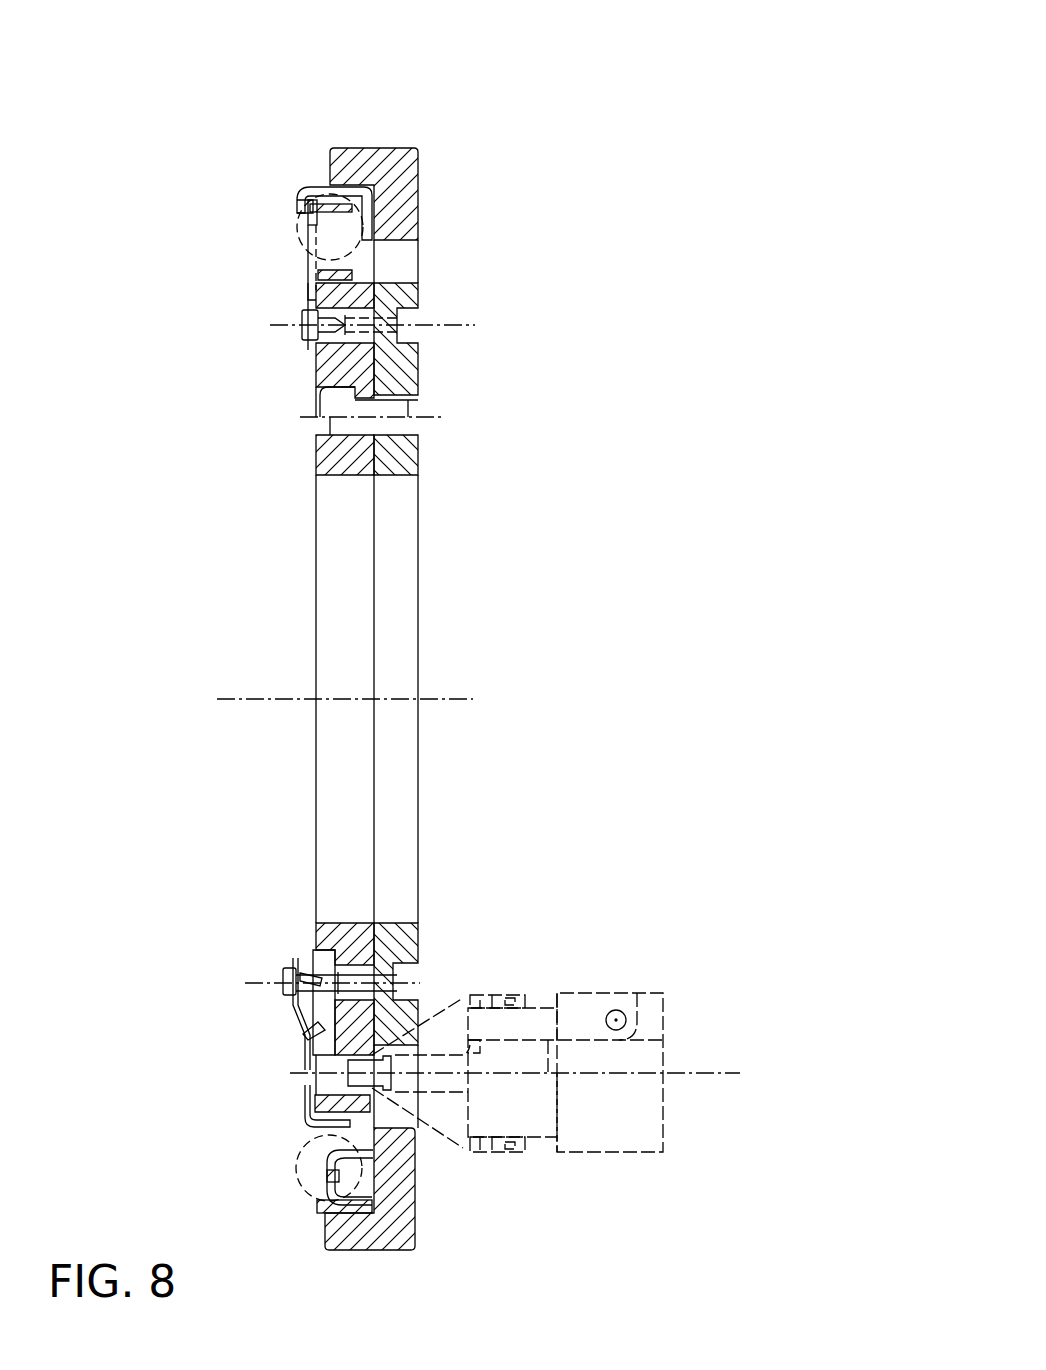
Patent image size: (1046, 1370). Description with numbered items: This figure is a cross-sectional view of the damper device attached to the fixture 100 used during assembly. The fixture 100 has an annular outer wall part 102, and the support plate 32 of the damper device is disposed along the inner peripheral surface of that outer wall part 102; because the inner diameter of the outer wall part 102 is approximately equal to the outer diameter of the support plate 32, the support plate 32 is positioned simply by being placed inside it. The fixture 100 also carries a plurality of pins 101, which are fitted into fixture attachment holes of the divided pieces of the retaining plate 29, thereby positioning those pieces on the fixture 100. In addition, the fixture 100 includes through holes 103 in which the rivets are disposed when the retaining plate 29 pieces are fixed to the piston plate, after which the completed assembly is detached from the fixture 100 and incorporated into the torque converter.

The fixture 100 is at (436, 133).
The outer wall part 102 is at (368, 148).
The support plate 32 is at (300, 197).
The retaining plate 29 is at (307, 293).
The pin 101 is at (297, 317).
The through hole 103 is at (368, 1057).